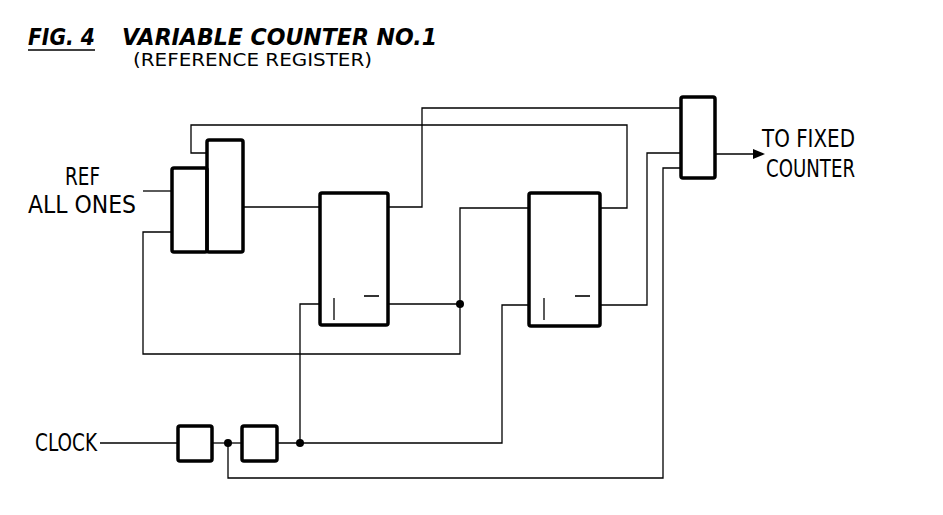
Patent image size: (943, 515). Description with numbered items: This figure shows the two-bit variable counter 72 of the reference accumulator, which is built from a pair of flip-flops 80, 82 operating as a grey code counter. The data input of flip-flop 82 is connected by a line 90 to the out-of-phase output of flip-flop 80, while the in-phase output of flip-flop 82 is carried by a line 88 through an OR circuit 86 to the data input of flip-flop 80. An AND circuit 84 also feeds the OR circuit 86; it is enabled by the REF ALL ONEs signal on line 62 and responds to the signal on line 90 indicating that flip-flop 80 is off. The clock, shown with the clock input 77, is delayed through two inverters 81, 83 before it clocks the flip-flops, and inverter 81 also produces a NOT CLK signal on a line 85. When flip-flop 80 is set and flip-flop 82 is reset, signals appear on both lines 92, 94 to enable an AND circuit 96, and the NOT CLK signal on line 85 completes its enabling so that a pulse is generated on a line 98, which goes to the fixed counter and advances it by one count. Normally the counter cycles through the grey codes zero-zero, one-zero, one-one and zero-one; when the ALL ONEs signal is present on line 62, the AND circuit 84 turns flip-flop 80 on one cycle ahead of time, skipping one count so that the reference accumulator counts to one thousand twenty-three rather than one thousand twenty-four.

The variable counter 72 is at (441, 88).
The REF ALL ONEs line 62 is at (163, 184).
The AND circuit 84 is at (192, 252).
The OR circuit 86 is at (232, 252).
The flip-flop 80 is at (320, 248).
The flip-flop 82 is at (570, 193).
The line 88 is at (382, 122).
The line 90 is at (460, 257).
The line 92 is at (583, 107).
The line 94 is at (647, 252).
The AND circuit 96 is at (711, 86).
The line 98 is at (745, 126).
The ALL ONEs detector 77 is at (157, 420).
The inverter 81 is at (205, 409).
The inverter 83 is at (268, 409).
The line 85 is at (663, 400).